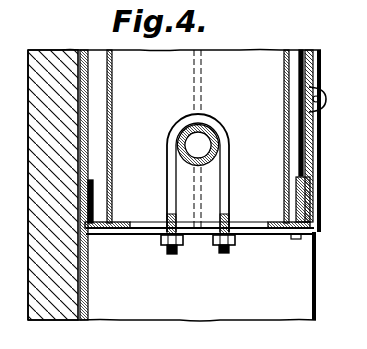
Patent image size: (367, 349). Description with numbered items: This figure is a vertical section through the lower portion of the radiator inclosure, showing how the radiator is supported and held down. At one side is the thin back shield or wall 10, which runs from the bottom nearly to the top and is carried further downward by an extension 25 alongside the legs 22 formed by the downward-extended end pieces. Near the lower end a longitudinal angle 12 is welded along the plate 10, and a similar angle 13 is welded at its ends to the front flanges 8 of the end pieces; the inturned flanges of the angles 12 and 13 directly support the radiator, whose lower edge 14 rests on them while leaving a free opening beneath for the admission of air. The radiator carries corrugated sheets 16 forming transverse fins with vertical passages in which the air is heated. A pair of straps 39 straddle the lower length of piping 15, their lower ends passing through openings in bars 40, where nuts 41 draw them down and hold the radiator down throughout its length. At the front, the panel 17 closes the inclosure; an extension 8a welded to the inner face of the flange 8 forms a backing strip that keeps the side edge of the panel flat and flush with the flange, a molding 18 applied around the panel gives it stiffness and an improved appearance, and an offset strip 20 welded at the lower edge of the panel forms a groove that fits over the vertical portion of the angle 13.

The flange 8 is at (315, 289).
The extension 8a is at (301, 78).
The shield or wall 10 is at (88, 100).
The longitudinal angle 12 is at (110, 232).
The angle 13 is at (296, 240).
The lower edge 14 is at (256, 222).
The piping 15 is at (178, 162).
The corrugated sheets 16 is at (198, 139).
The panel 17 is at (311, 66).
The molding 18 is at (326, 99).
The offset strip 20 is at (298, 178).
The legs 22 is at (172, 307).
The extension 25 is at (90, 298).
The straps 39 is at (231, 160).
The bars 40 is at (141, 233).
The nuts 41 is at (217, 244).